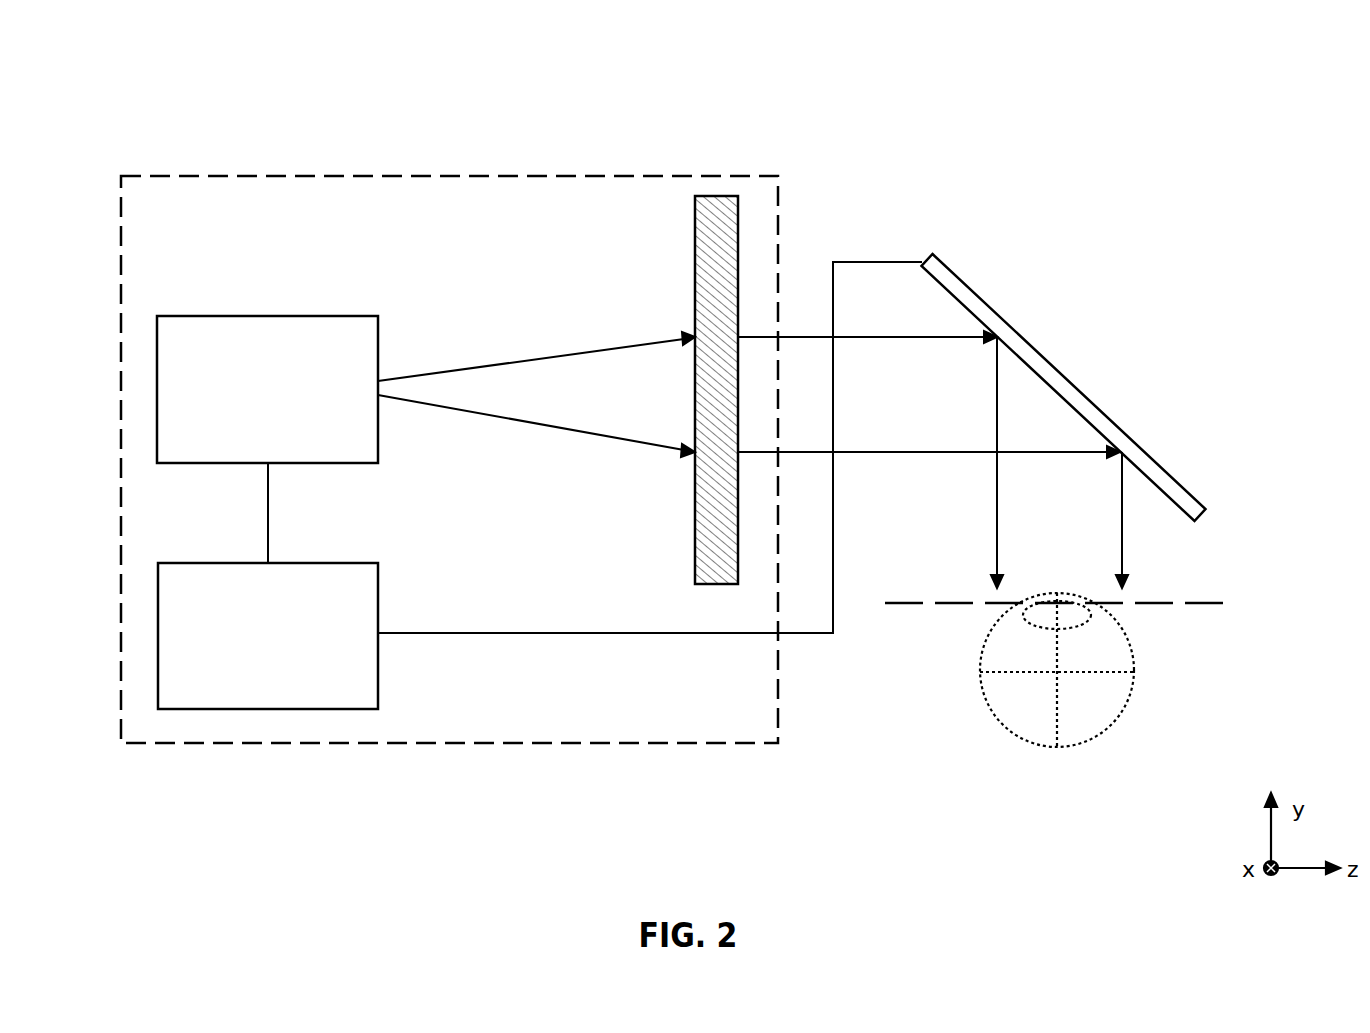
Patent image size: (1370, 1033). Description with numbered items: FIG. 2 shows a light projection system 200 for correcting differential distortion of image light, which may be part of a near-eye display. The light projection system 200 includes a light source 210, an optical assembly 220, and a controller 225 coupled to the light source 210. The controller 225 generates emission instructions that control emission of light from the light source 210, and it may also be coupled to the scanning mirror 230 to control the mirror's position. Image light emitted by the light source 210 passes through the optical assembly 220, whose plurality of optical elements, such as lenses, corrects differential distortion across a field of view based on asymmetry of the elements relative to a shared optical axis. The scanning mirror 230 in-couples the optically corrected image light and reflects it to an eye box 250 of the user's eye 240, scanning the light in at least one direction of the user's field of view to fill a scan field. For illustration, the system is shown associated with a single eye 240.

The light projection system 200 is at (280, 175).
The light source 210 is at (248, 416).
The optical assembly 220 is at (716, 196).
The controller 225 is at (248, 662).
The scanning mirror 230 is at (1068, 382).
The eye 240 is at (1057, 750).
The eye box 250 is at (1196, 608).